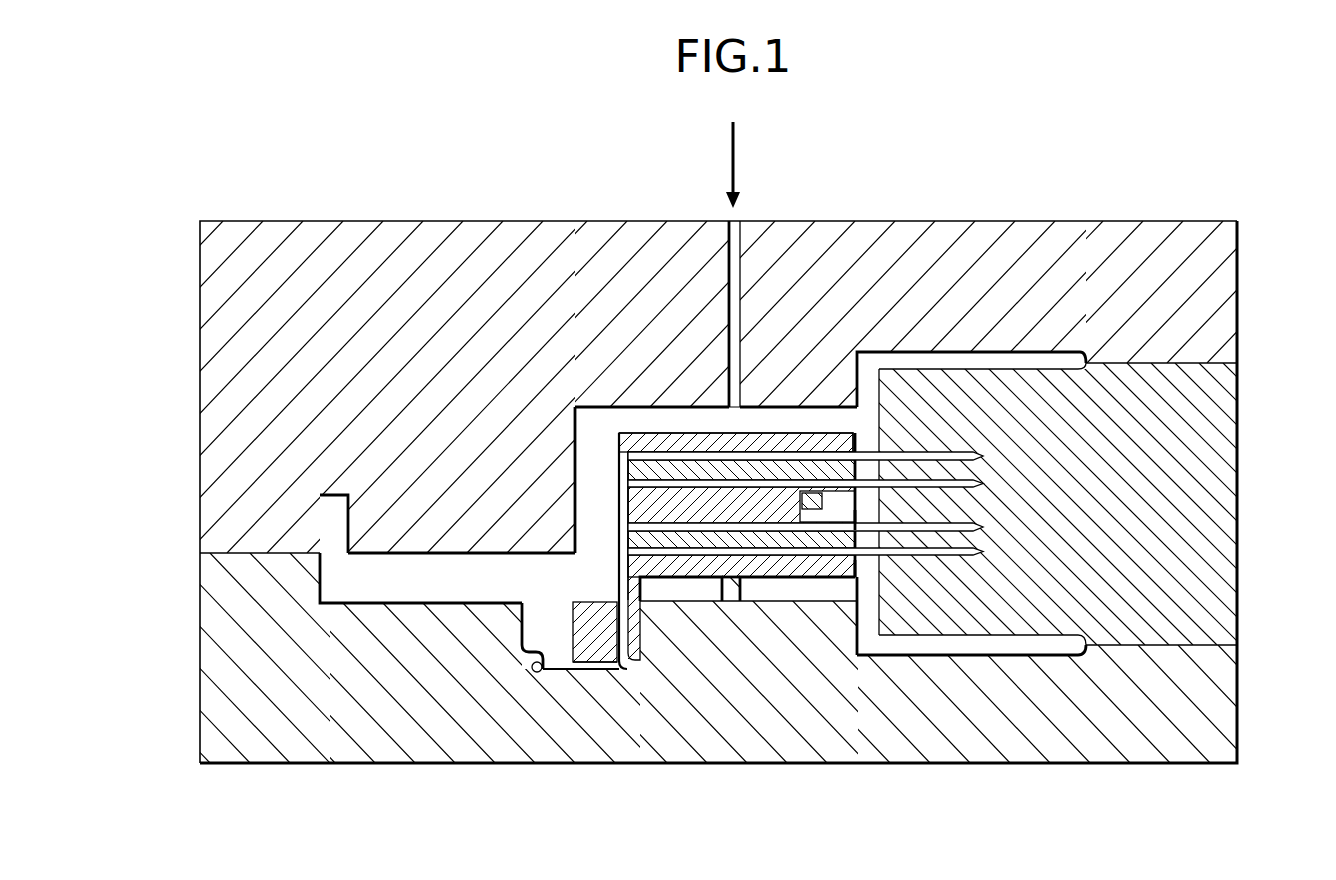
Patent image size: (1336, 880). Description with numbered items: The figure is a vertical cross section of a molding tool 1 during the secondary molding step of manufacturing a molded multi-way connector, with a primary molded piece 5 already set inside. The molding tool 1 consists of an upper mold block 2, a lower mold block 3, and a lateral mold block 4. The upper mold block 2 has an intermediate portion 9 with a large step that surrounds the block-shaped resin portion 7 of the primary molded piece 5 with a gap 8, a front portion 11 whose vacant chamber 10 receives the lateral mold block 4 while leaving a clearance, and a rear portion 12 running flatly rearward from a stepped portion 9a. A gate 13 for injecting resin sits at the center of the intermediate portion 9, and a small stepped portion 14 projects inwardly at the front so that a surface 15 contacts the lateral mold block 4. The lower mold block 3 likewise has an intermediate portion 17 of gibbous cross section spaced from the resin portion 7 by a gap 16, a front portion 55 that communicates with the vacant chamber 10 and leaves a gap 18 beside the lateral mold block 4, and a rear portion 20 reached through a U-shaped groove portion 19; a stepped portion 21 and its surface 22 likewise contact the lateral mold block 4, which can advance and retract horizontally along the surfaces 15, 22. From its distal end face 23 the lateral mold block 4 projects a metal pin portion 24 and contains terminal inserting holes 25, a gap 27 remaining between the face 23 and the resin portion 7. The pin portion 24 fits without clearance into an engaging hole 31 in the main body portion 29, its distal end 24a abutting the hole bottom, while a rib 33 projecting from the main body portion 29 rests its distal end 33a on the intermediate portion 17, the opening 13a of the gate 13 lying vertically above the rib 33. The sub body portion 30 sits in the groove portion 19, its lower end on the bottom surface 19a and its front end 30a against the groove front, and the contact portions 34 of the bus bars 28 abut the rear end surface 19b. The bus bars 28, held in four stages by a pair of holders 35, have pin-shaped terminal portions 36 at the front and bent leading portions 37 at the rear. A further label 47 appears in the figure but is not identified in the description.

The molding tool 1 is at (905, 196).
The upper mold block 2 is at (768, 433).
The lower mold block 3 is at (795, 596).
The lateral mold block 4 is at (1040, 352).
The primary molded piece 5 is at (598, 556).
The resin portion 7 is at (693, 417).
The gap 8 is at (634, 432).
The intermediate portion 9 is at (587, 428).
The stepped portion 9a is at (580, 462).
The vacant chamber 10 is at (1013, 358).
The front portion 11 is at (967, 360).
The rear portion 12 is at (369, 561).
The gate 13 is at (732, 278).
The opening 13a is at (734, 408).
The small stepped portion 14 is at (1077, 351).
The surface 15 is at (1197, 366).
The gap 16 is at (705, 597).
The intermediate portion 17 is at (766, 590).
The gap 18 is at (975, 650).
The U-shaped groove portion 19 is at (533, 668).
The bottom surface 19a is at (543, 666).
The rear end surface 19b is at (524, 650).
The rear portion 20 is at (369, 597).
The stepped portion 21 is at (1078, 656).
The surface 22 is at (1202, 645).
The distal end face 23 is at (859, 515).
The pin portion 24 is at (831, 505).
The distal end 24a is at (791, 500).
The terminal inserting holes 25 is at (934, 458).
The gap 27 is at (868, 440).
The bus bars 28 is at (675, 590).
The main body portion 29 is at (651, 432).
The sub body portion 30 is at (580, 633).
The front end 30a is at (645, 632).
The engaging hole 31 is at (808, 590).
The rib 33 is at (744, 590).
The distal end 33a is at (728, 598).
The contact portions 34 is at (584, 668).
The holders 35 is at (628, 498).
The terminal portions 36 is at (946, 560).
The leading portions 37 is at (622, 585).
The cavity bottom wall 47 is at (613, 420).
The front portion 55 is at (1029, 648).